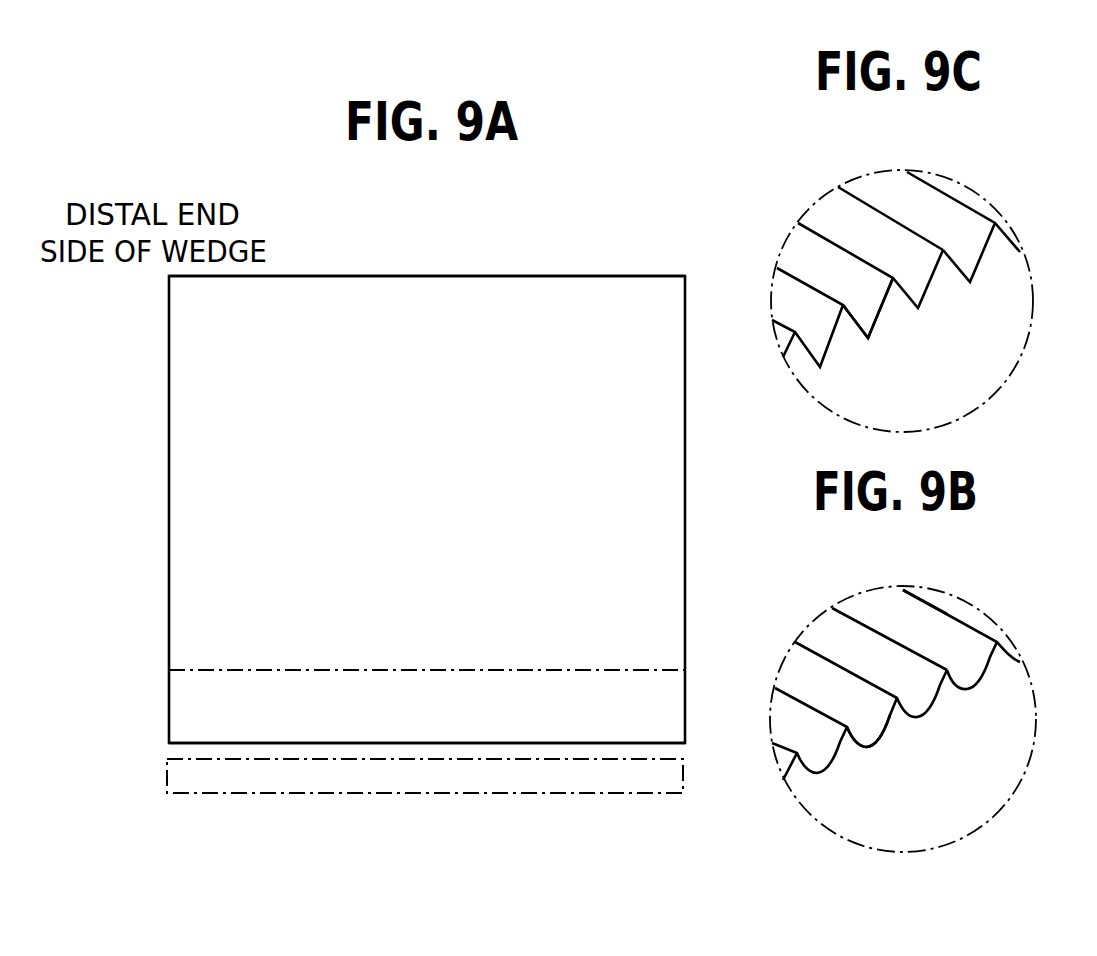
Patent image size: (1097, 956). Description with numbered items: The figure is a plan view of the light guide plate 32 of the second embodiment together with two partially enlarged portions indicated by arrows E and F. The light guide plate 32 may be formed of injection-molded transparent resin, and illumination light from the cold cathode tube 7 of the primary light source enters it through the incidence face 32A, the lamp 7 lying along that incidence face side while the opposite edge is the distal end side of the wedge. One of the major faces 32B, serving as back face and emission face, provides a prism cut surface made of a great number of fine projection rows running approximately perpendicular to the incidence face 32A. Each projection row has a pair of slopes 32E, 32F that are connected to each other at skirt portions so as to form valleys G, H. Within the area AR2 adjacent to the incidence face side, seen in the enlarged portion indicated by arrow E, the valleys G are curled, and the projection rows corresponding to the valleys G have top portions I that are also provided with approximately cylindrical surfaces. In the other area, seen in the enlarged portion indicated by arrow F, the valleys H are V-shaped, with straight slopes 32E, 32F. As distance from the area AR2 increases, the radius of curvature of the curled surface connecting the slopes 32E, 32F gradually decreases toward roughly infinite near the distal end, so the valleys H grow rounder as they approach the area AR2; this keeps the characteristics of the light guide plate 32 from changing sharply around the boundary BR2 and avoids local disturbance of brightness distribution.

In FIG. 9A, the light guide plate 32 is at (509, 295).
In FIG. 9A, the incidence face 32A is at (166, 744).
In FIG. 9A, the major face 32B is at (387, 310).
In FIG. 9B, the major face 32B is at (838, 632).
In FIG. 9C, the slope 32E is at (838, 210).
In FIG. 9C, the slope 32F is at (955, 250).
In FIG. 9B, the slope 32F is at (958, 668).
In FIG. 9A, the cold cathode tube 7 is at (557, 785).
In FIG. 9A, the boundary BR2 is at (203, 655).
In FIG. 9A, the area AR2 is at (193, 705).
In FIG. 9A, the arrow E is at (585, 708).
In FIG. 9A, the arrow F is at (478, 373).
In FIG. 9B, the curled valley G is at (867, 717).
In FIG. 9C, the V-shaped valley H is at (862, 312).
In FIG. 9B, the top portion I is at (926, 598).